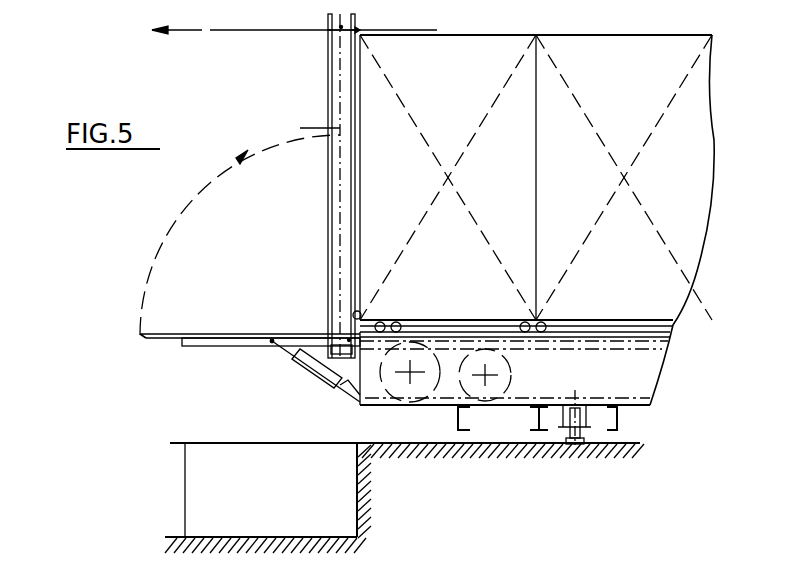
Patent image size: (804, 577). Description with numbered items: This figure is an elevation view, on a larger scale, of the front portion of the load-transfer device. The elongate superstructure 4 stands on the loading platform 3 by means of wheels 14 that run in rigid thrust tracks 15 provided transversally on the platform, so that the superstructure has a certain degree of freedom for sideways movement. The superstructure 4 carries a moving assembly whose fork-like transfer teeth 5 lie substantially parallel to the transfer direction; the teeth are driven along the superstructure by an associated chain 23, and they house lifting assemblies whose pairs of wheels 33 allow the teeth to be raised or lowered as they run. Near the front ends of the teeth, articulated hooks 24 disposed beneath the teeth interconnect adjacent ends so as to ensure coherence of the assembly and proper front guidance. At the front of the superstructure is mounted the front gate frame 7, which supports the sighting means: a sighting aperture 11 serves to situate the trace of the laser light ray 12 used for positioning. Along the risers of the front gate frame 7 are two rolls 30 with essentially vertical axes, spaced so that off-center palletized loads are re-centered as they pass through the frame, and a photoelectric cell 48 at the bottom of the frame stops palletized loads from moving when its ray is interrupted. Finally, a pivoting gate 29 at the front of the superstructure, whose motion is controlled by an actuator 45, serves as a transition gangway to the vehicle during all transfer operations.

The platform 3 is at (388, 443).
The superstructure 4 is at (372, 400).
The teeth 5 is at (596, 322).
The front gate frame 7 is at (328, 82).
The rear sighting aperture 11 is at (357, 31).
The light ray 12 is at (226, 31).
The wheels 14 is at (572, 440).
The thrust tracks 15 is at (582, 445).
The chain 23 is at (580, 350).
The articulated hooks 24 is at (444, 405).
The pivoting gate 29 is at (224, 346).
The rolls 30 is at (332, 268).
The wheels 33 is at (542, 322).
The actuator 45 is at (312, 362).
The photoelectric cell 48 is at (353, 315).